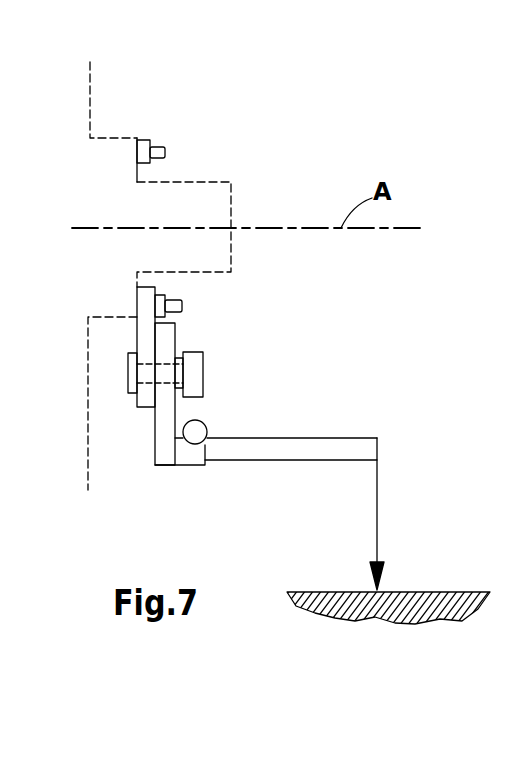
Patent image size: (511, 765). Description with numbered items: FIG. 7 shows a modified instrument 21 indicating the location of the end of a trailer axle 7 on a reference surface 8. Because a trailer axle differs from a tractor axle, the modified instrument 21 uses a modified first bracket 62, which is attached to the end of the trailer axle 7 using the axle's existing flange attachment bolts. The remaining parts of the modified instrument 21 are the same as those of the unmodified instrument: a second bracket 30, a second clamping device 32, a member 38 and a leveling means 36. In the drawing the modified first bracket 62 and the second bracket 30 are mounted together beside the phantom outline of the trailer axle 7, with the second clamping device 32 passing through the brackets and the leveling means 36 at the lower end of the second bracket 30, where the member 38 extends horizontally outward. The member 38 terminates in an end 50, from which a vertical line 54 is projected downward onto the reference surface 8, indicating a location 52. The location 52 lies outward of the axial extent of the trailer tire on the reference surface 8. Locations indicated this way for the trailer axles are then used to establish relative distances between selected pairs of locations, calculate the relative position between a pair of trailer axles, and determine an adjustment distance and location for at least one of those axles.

The trailer axle 7 is at (236, 190).
The reference surface 8 is at (326, 588).
The modified instrument 21 is at (219, 409).
The second bracket 30 is at (170, 337).
The second clamping device 32 is at (137, 356).
The leveling means 36 is at (195, 433).
The member 38 is at (287, 452).
The end 50 is at (382, 444).
The location 52 is at (392, 584).
The sensing line 54 is at (377, 480).
The modified first bracket 62 is at (140, 306).